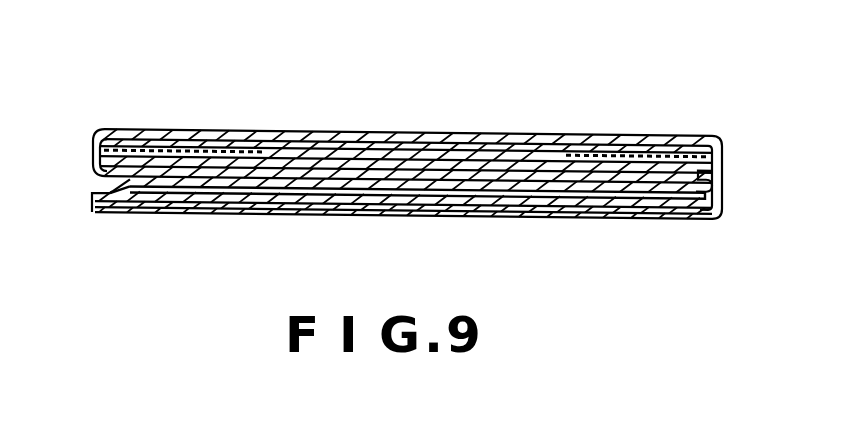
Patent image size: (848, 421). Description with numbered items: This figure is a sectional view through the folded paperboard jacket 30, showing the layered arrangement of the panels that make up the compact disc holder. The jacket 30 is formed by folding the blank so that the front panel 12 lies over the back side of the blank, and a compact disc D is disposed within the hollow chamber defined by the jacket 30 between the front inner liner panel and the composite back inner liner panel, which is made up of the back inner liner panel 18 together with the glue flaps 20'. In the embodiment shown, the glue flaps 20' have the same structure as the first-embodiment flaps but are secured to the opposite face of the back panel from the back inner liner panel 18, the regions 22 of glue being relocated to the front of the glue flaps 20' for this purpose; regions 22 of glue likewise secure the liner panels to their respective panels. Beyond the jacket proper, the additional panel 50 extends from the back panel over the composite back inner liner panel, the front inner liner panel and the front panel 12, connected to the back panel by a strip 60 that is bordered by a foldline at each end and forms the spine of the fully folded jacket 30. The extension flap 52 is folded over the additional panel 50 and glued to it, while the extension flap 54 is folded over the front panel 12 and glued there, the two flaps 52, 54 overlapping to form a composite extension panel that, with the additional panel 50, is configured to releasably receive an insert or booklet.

The jacket 30 is at (238, 100).
The glue flaps 20' is at (402, 139).
The back inner liner panel 18 is at (337, 136).
The compact disc D is at (437, 152).
The front panel 12 is at (509, 176).
The extension flap 54 is at (420, 188).
The regions of glue 22 is at (108, 206).
The extension flap 52 is at (556, 206).
The additional panel 50 is at (645, 217).
The strip 60 is at (722, 174).